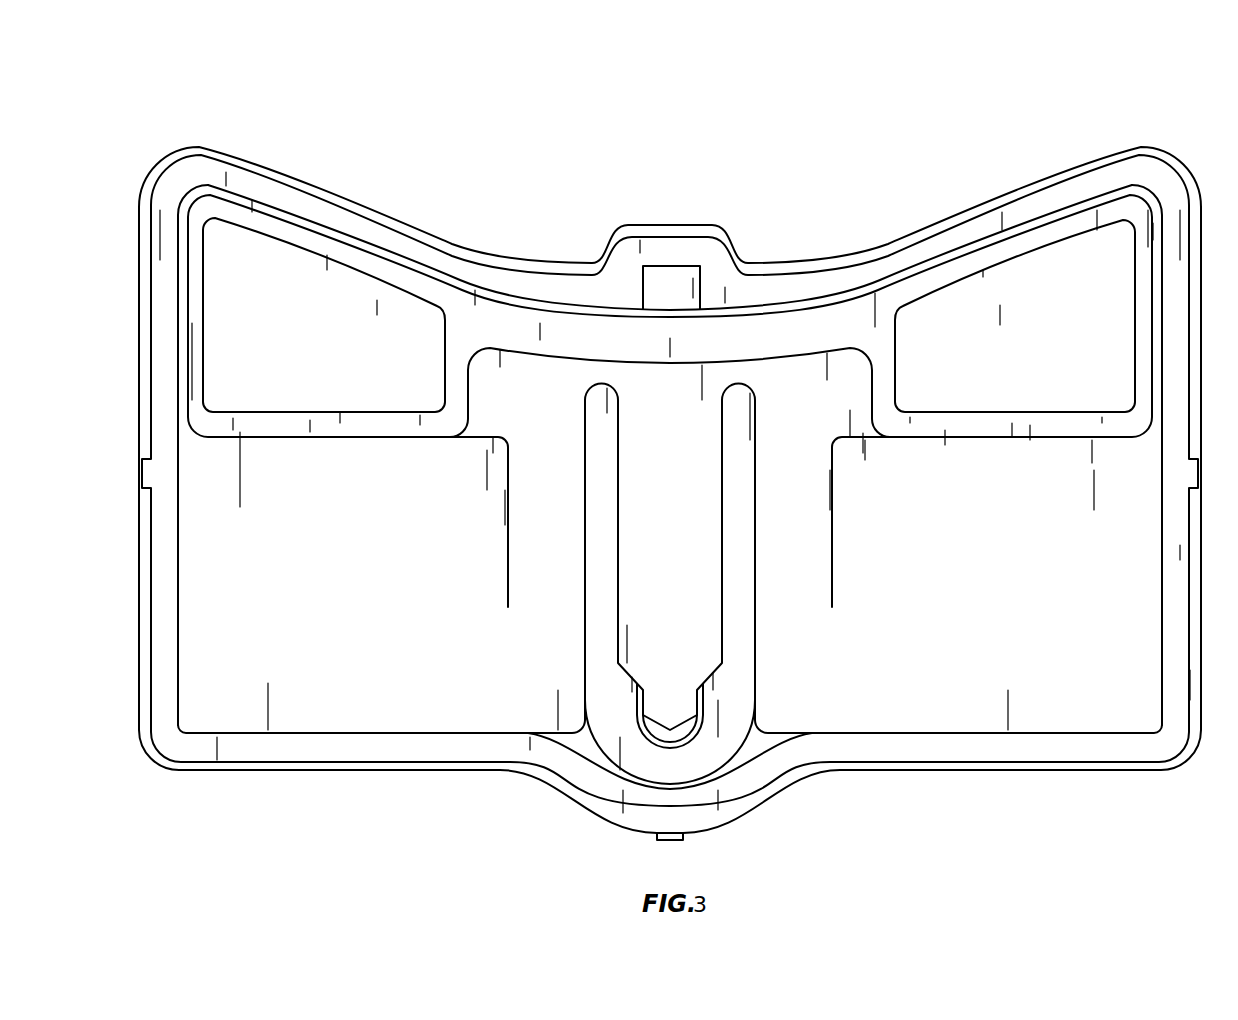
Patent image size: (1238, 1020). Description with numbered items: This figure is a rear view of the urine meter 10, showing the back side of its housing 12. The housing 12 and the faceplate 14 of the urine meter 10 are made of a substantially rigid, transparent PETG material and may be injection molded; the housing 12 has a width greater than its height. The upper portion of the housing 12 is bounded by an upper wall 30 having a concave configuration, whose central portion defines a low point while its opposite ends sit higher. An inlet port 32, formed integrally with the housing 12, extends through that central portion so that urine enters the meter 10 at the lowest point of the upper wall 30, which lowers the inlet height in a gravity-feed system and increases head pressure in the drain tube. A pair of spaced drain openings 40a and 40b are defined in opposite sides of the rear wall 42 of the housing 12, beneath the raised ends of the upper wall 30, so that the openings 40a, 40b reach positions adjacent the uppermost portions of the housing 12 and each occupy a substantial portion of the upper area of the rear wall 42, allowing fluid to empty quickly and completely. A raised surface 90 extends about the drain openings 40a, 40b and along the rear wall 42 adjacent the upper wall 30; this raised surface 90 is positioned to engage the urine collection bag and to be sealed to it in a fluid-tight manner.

The urine meter 10 is at (669, 78).
The housing 12 is at (222, 160).
The faceplate 14 is at (451, 246).
The upper wall 30 is at (582, 306).
The inlet port 32 is at (680, 265).
The drain opening 40a is at (1007, 320).
The drain opening 40b is at (292, 313).
The rear wall 42 is at (798, 370).
The raised surface 90 is at (542, 320).